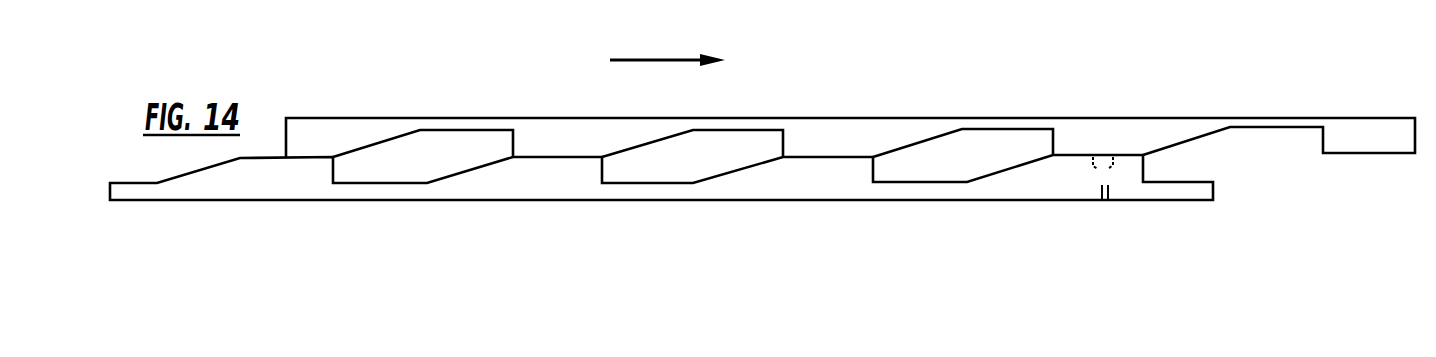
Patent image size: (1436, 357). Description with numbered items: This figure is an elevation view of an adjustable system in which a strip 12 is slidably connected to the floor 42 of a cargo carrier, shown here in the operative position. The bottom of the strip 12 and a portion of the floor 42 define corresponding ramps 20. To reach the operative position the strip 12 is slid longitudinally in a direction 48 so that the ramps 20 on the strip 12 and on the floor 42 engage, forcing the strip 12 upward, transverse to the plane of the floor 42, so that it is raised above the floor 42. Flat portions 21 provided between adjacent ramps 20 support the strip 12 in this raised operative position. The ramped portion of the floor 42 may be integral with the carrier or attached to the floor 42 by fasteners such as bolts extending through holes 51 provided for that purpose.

The strip 12 is at (900, 118).
The ramp 20 is at (643, 150).
The flat portion 21 is at (740, 129).
The floor 42 is at (743, 200).
The direction 48 is at (650, 59).
The hole 51 is at (1113, 167).